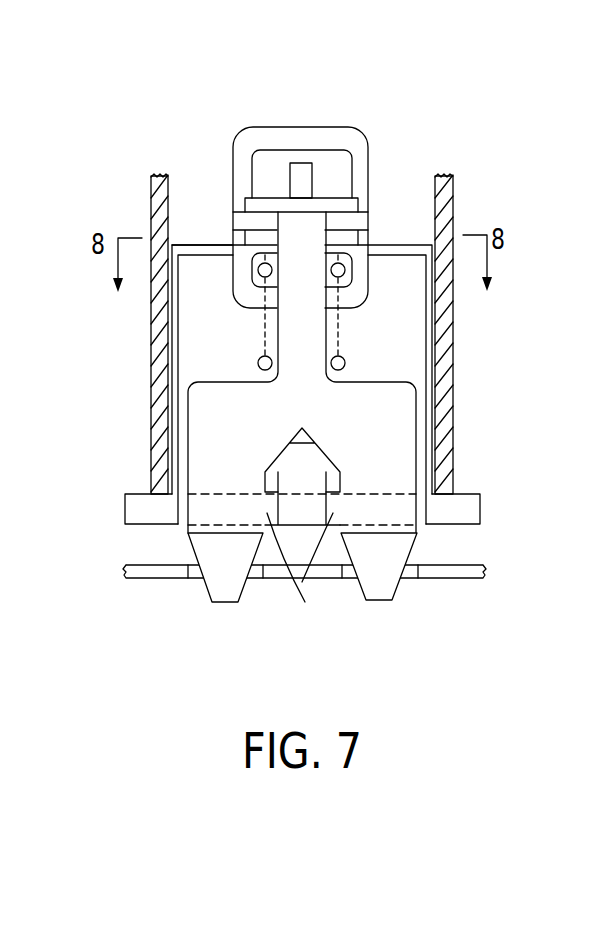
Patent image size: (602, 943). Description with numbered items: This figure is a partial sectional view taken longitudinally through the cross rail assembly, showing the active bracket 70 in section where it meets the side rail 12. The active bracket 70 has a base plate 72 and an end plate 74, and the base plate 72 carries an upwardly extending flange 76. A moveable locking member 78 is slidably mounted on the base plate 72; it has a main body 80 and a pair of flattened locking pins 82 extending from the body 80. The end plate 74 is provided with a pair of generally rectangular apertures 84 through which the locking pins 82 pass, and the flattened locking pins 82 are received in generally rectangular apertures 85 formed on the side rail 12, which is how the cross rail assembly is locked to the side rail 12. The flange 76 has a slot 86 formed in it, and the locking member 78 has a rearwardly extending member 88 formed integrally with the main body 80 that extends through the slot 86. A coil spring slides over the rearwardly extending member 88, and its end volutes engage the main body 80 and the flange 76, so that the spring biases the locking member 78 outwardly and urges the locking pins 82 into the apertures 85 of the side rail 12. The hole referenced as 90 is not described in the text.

The side rail 12 is at (462, 567).
The active bracket 70 is at (502, 458).
The base plate 72 is at (413, 355).
The end plate 74 is at (140, 520).
The flange 76 is at (203, 245).
The moveable locking member 78 is at (398, 400).
The main body 80 is at (398, 435).
The flattened locking pins 82 is at (232, 583).
The rectangular apertures 84 is at (305, 602).
The rectangular apertures 85 is at (197, 576).
The slot 86 is at (279, 247).
The rearwardly extending member 88 is at (292, 334).
The hole 90 is at (345, 360).